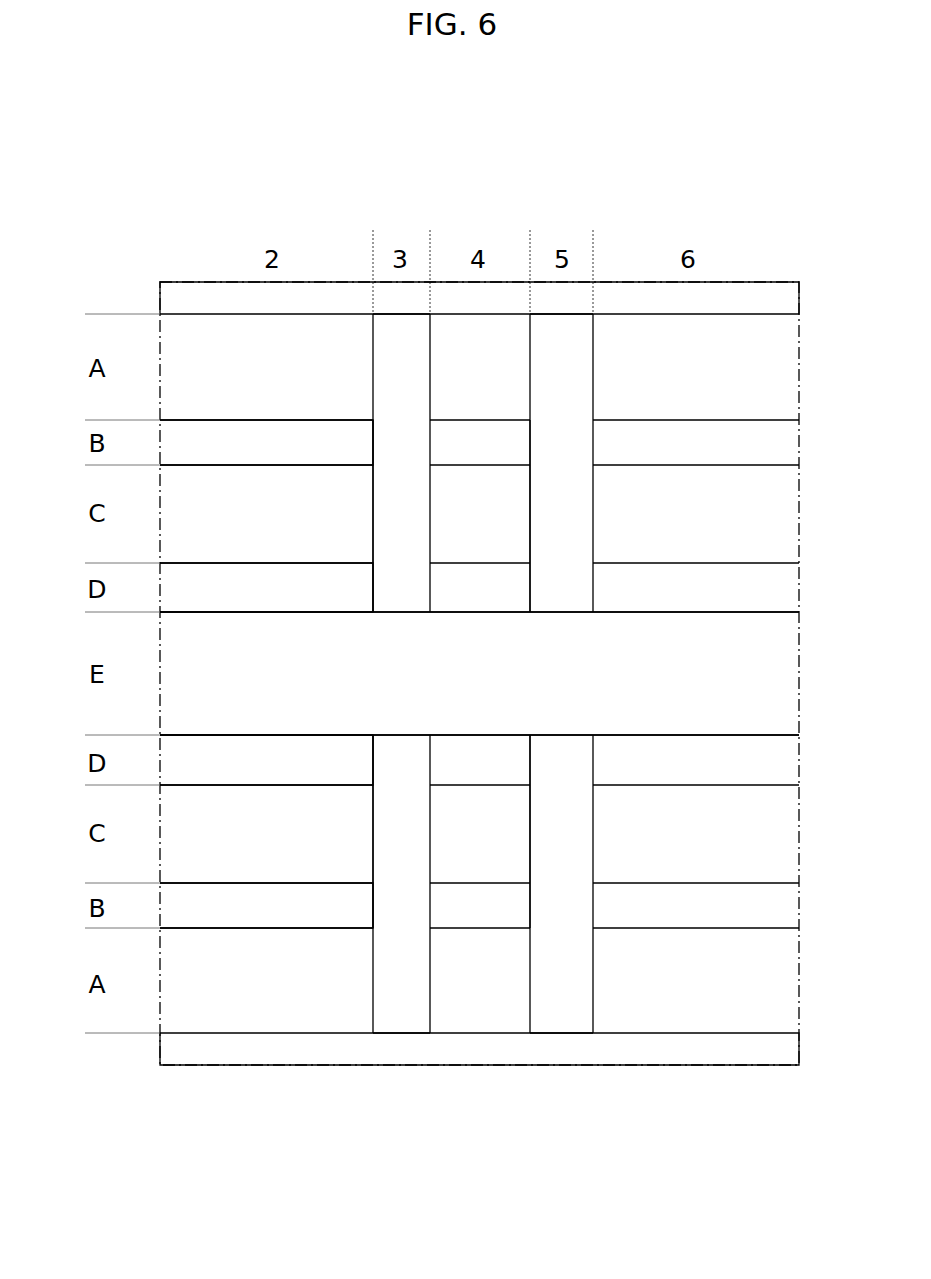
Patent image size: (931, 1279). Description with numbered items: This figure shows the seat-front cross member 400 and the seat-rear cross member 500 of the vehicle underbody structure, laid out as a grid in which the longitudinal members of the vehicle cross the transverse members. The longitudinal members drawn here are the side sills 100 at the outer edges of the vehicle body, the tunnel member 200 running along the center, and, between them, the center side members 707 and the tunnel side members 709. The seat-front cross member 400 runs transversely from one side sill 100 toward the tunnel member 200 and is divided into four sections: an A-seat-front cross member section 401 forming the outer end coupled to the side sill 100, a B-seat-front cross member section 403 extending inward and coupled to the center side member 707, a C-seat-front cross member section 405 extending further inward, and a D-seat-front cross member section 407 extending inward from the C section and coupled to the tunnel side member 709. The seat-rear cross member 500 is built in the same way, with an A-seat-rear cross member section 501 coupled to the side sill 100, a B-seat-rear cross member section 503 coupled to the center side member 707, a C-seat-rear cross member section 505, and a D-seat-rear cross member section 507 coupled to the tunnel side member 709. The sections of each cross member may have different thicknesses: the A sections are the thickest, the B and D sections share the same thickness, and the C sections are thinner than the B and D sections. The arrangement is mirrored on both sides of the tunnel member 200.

The side sill 100 is at (264, 1050).
The tunnel member 200 is at (479, 673).
The seat-front cross member 400 is at (407, 1022).
The A-seat-front cross member section 401 is at (401, 673).
The B-seat-front cross member section 403 is at (399, 674).
The C-seat-front cross member section 405 is at (399, 674).
The D-seat-front cross member section 407 is at (399, 674).
The seat-rear cross member 500 is at (567, 1015).
The A-seat-rear cross member section 501 is at (561, 673).
The B-seat-rear cross member section 503 is at (558, 674).
The C-seat-rear cross member section 505 is at (558, 674).
The D-seat-rear cross member section 507 is at (558, 674).
The center side member 707 is at (266, 674).
The tunnel side member 709 is at (266, 674).